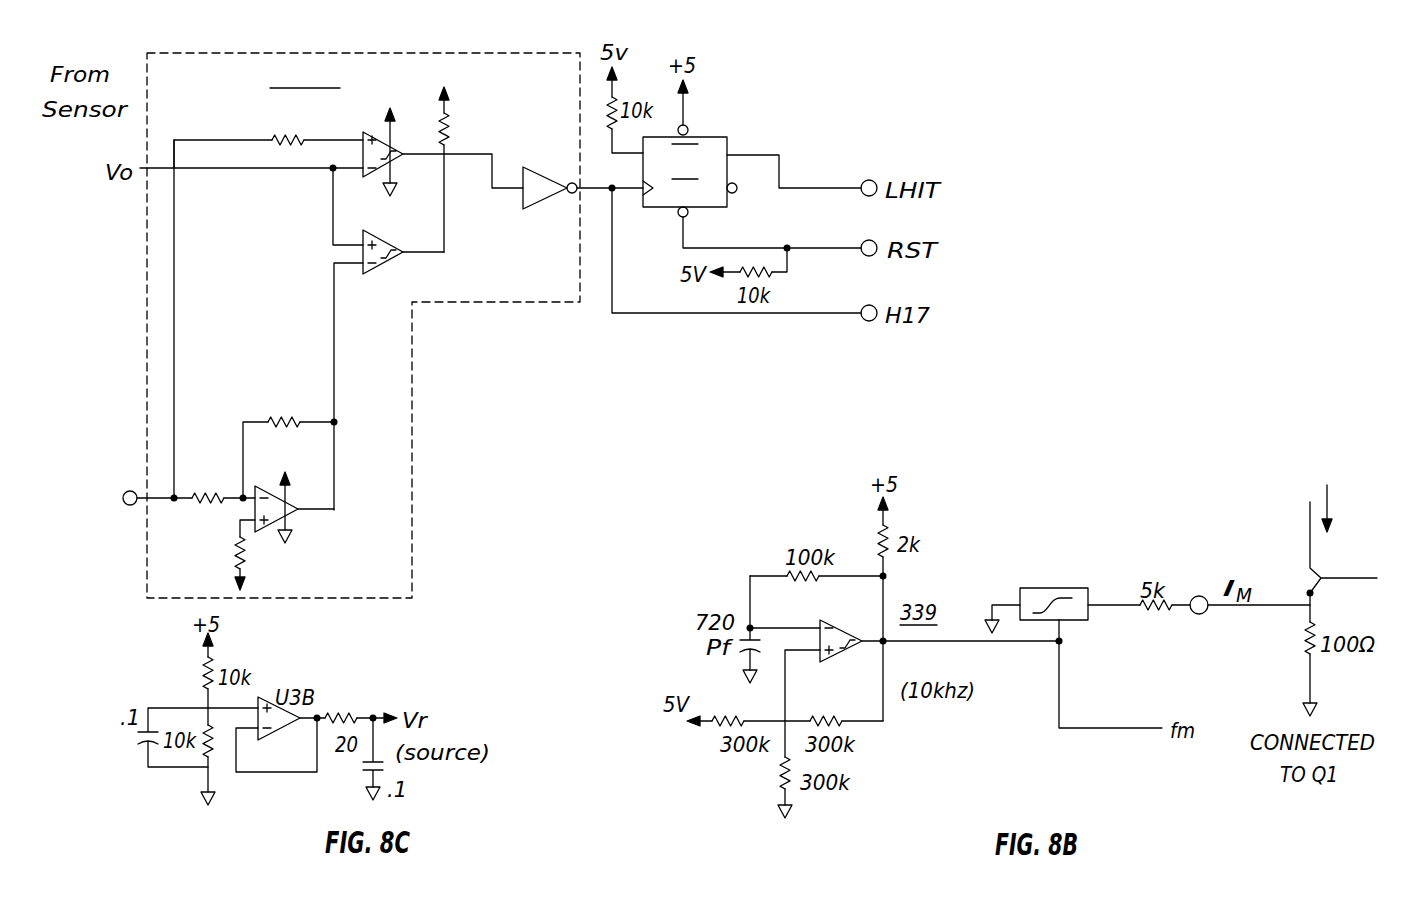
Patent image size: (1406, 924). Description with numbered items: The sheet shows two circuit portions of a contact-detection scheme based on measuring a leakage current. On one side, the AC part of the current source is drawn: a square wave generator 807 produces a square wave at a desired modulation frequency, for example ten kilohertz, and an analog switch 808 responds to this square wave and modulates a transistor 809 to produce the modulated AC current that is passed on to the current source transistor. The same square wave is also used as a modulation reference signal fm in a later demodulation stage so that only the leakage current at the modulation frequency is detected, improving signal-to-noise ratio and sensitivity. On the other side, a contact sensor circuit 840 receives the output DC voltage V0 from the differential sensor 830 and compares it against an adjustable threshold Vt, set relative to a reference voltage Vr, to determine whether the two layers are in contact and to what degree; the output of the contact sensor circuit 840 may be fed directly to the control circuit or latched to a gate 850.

In FIG. 8C, the differential sensor 830 is at (142, 167).
In FIG. 8C, the contact sensor circuit 840 is at (537, 282).
In FIG. 8C, the gate 850 is at (717, 137).
In FIG. 8B, the square wave generator 807 is at (821, 621).
In FIG. 8B, the analog switch 808 is at (1082, 588).
In FIG. 8B, the transistor 809 is at (1320, 572).